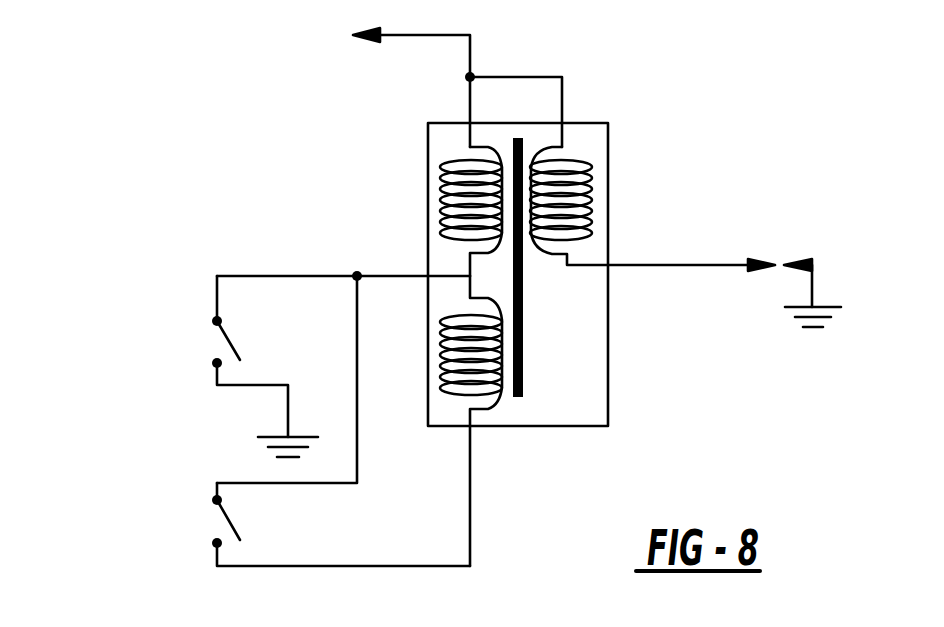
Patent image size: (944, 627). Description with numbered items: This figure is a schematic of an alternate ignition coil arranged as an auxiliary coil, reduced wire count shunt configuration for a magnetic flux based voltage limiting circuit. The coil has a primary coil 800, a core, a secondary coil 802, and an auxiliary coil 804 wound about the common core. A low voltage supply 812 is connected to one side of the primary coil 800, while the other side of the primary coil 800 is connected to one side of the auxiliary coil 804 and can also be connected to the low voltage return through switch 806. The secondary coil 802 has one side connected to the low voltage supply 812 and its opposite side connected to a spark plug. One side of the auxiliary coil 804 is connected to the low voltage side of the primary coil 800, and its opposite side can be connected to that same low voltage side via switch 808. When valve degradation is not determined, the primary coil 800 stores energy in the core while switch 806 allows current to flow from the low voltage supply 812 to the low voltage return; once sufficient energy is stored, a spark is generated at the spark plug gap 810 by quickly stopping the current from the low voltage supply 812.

The primary coil 800 is at (458, 150).
The secondary coil 802 is at (585, 157).
The auxiliary coil 804 is at (448, 398).
The switch 806 is at (215, 342).
The switch 808 is at (216, 521).
The spark plug gap 810 is at (775, 278).
The low voltage supply 812 is at (435, 84).